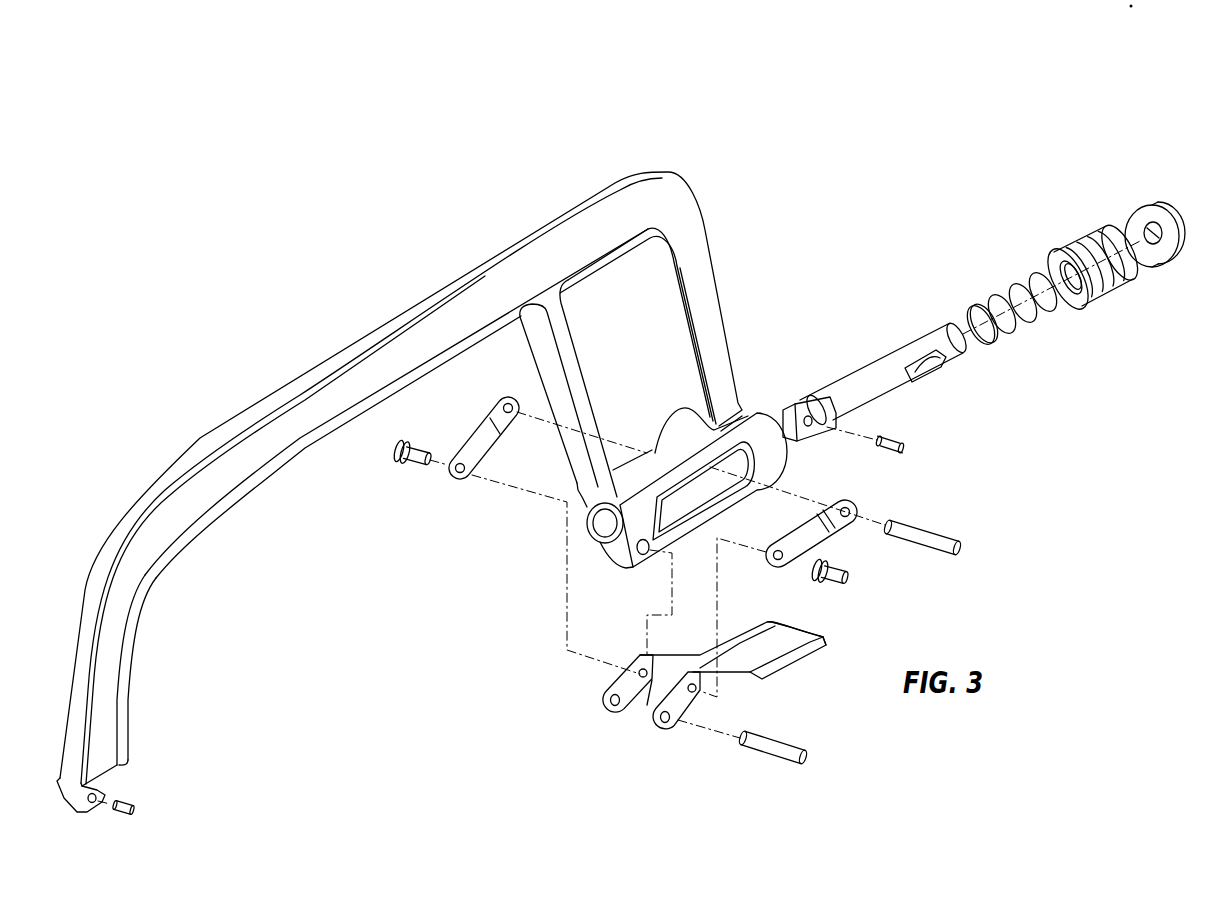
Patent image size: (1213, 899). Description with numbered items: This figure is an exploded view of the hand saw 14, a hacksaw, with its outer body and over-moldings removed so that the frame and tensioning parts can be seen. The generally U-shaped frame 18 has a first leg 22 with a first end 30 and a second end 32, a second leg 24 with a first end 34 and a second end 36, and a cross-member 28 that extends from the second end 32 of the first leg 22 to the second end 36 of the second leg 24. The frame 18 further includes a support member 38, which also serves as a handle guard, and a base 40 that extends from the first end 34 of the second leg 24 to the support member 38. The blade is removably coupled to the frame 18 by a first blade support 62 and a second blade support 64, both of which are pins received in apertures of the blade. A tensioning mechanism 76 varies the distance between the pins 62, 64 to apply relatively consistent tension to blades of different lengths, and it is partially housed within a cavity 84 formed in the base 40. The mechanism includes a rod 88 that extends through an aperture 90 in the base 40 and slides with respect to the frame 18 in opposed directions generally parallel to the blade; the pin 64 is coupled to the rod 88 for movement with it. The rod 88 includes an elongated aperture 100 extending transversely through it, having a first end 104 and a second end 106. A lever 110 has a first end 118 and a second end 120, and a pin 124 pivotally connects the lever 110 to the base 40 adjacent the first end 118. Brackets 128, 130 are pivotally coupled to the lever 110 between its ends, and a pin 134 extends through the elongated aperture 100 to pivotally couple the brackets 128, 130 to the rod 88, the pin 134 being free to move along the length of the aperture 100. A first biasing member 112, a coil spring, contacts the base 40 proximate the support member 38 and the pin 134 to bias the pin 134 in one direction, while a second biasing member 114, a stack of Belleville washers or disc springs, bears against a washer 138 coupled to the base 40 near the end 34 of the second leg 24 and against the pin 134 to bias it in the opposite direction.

The hand saw 14 is at (900, 91).
The frame 18 is at (362, 346).
The first leg 22 is at (137, 637).
The second leg 24 is at (720, 287).
The cross-member 28 is at (260, 412).
The first end 30 is at (82, 812).
The second end 32 is at (143, 577).
The first end 34 is at (730, 416).
The second end 36 is at (660, 245).
The support member 38 is at (568, 356).
The base 40 is at (662, 452).
The first blade support 62 is at (140, 800).
The second blade support 64 is at (902, 446).
The tensioning mechanism 76 is at (1113, 516).
The cavity 84 is at (675, 517).
The rod 88 is at (863, 372).
The aperture 90 is at (605, 541).
The elongated aperture 100 is at (927, 373).
The first end 104 is at (950, 357).
The second end 106 is at (917, 380).
The lever 110 is at (770, 672).
The first biasing member 112 is at (997, 287).
The second biasing member 114 is at (1080, 237).
The first end 118 is at (610, 713).
The second end 120 is at (817, 638).
The pin 124 is at (773, 757).
The bracket 128 is at (835, 528).
The bracket 130 is at (490, 452).
The pin 134 is at (923, 533).
The washer 138 is at (1162, 200).